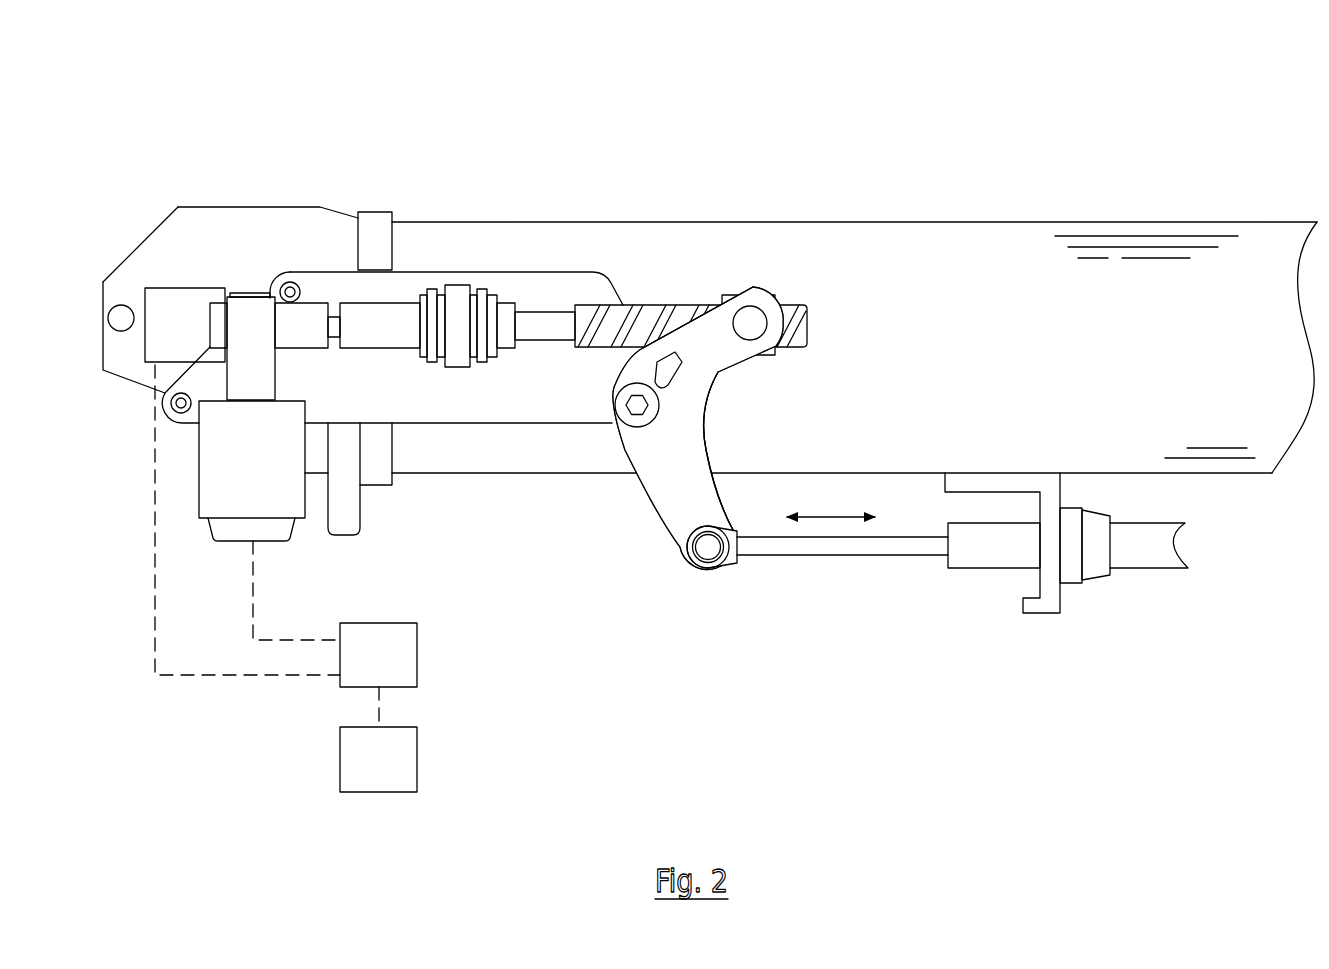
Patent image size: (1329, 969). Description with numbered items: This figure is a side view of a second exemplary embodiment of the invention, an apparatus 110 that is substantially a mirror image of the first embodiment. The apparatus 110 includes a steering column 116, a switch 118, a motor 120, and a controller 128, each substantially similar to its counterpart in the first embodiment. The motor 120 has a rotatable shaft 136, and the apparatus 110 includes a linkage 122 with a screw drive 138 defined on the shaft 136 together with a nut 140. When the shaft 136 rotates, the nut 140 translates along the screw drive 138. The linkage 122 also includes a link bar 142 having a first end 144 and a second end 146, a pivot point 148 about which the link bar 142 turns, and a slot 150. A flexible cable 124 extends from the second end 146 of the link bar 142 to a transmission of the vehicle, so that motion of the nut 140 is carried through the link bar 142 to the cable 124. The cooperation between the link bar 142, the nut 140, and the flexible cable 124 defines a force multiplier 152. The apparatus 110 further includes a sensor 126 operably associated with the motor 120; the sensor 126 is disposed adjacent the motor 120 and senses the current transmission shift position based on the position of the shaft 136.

The apparatus 110 is at (716, 99).
The steering column 116 is at (866, 159).
The switch 118 is at (405, 765).
The motor 120 is at (206, 487).
The linkage 122 is at (622, 620).
The flexible cable 124 is at (843, 561).
The sensor 126 is at (168, 302).
The controller 128 is at (382, 638).
The rotatable shaft 136 is at (549, 318).
The screw drive 138 is at (637, 299).
The nut 140 is at (728, 295).
The link bar 142 is at (670, 497).
The first end 144 is at (763, 304).
The second end 146 is at (708, 571).
The pivot point 148 is at (640, 405).
The slot 150 is at (712, 307).
The force multiplier 152 is at (742, 424).